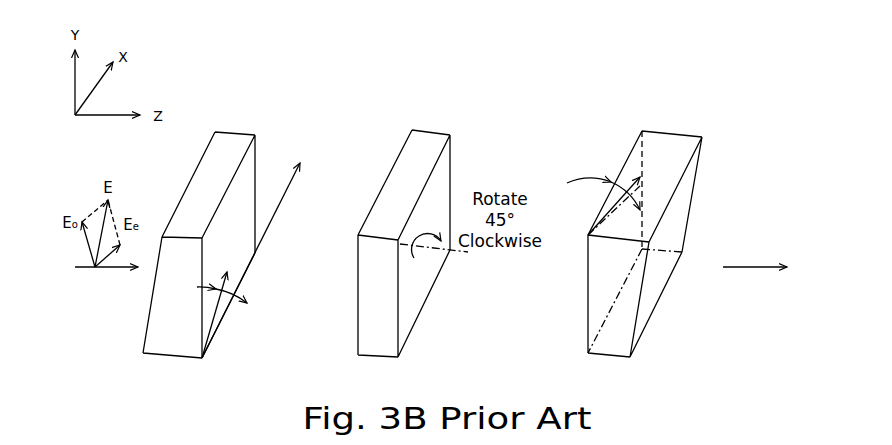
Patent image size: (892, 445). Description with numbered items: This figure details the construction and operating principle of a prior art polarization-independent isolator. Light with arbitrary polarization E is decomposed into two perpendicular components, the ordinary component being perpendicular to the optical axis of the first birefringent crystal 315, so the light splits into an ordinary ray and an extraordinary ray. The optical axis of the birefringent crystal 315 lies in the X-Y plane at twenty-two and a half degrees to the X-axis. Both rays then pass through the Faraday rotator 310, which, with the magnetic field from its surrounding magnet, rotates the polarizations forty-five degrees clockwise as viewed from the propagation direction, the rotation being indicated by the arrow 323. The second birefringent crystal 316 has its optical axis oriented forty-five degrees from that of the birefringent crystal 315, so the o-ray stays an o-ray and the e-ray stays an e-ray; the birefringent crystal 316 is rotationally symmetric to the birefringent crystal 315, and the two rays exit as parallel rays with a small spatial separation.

The birefringent crystal 315 is at (233, 128).
The Faraday rotator 310 is at (428, 128).
The birefringent crystal 316 is at (679, 130).
The arrow 323 is at (468, 257).